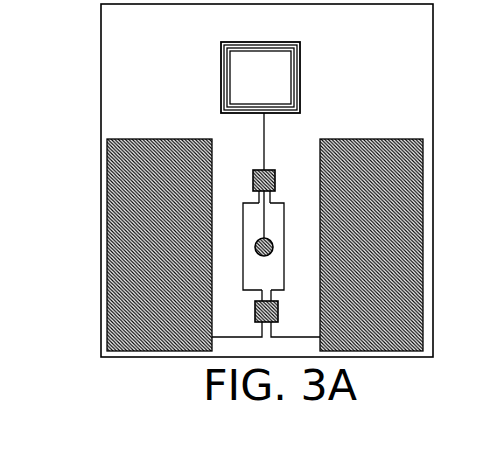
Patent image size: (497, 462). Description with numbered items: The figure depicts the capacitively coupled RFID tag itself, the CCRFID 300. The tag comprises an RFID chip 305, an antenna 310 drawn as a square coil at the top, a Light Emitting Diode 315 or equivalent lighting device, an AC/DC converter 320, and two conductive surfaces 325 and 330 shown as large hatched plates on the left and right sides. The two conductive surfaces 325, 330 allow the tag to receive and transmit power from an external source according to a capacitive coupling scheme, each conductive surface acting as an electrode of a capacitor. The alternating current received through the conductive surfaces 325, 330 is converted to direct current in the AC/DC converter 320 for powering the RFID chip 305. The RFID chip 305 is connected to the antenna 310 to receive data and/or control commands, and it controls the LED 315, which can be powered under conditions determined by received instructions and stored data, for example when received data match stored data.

The CCRFID tag 300 is at (101, 105).
The RFID chip 305 is at (265, 170).
The antenna 310 is at (256, 42).
The Light Emitting Diode (LED) 315 is at (272, 241).
The AC/DC converter 320 is at (255, 316).
The conductive surface 325 is at (161, 139).
The conductive surface 330 is at (369, 139).